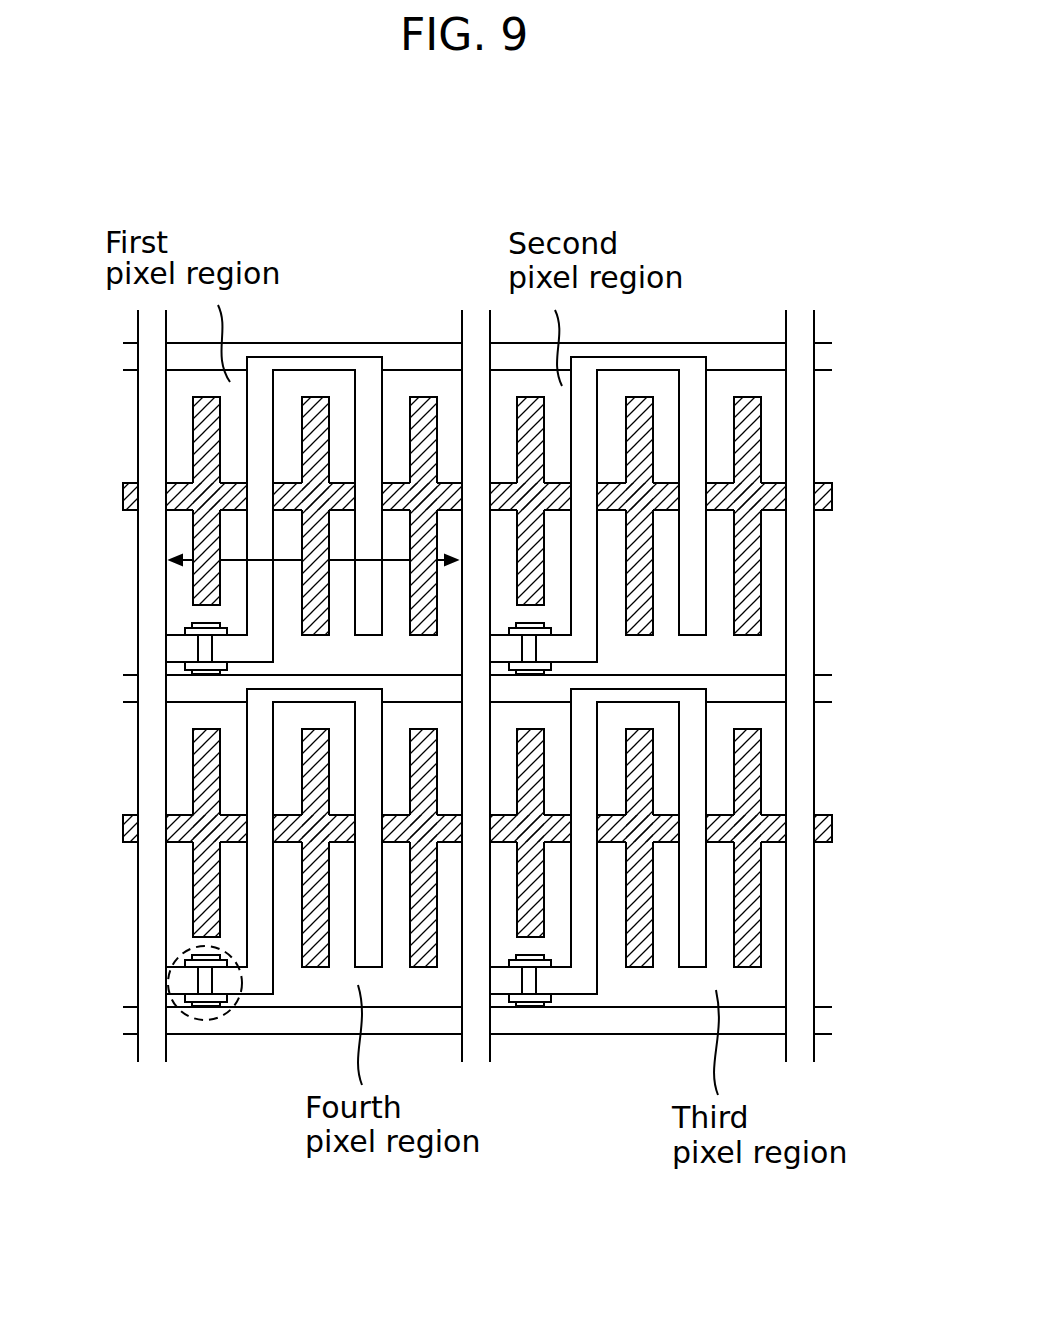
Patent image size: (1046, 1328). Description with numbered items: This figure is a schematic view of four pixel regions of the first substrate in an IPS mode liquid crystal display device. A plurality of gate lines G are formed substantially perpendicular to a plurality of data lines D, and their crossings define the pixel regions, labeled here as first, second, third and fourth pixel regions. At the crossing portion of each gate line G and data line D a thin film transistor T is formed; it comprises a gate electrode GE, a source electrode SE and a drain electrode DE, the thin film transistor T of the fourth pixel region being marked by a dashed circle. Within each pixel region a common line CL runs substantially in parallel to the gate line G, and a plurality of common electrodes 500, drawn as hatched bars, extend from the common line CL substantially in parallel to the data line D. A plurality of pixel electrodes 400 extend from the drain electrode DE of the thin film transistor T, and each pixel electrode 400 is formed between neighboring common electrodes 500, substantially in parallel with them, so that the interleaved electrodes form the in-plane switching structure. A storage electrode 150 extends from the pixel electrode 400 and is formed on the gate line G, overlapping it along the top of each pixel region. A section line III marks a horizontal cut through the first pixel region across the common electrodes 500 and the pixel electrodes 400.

The storage electrode 150 is at (316, 362).
The pixel electrode 400 is at (583, 418).
The common electrode 500 is at (637, 580).
The common line CL is at (832, 496).
The gate line G is at (772, 688).
The data line D is at (152, 435).
The gate electrode GE is at (196, 623).
The source electrode SE is at (190, 650).
The drain electrode DE is at (222, 648).
The thin film transistor T is at (207, 1018).
The section line III- III is at (315, 578).